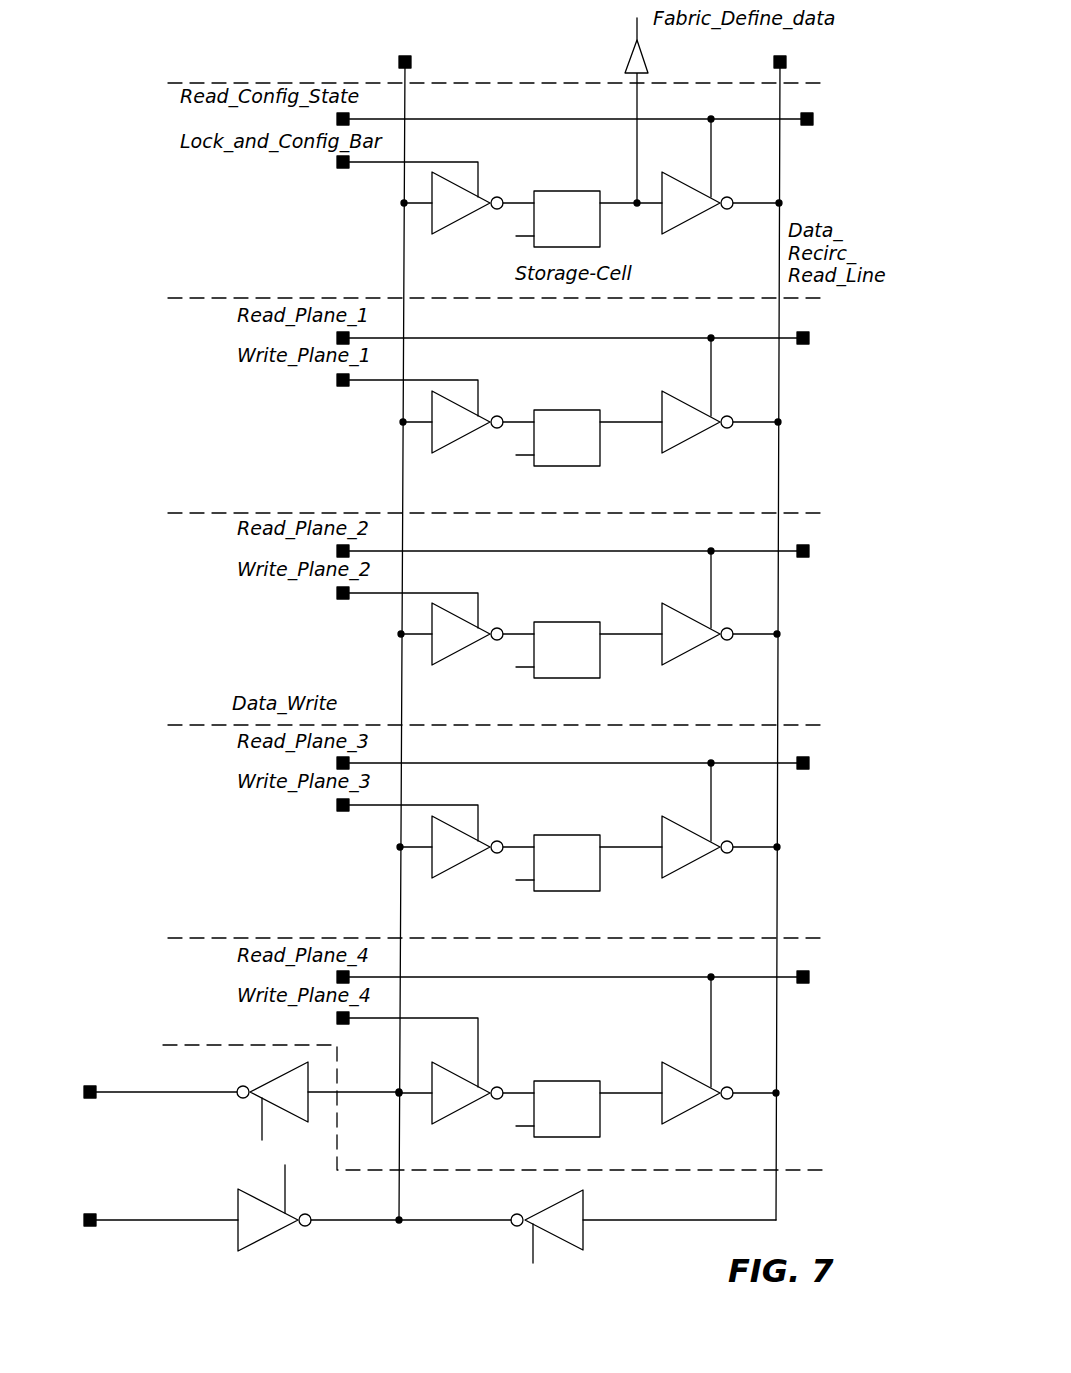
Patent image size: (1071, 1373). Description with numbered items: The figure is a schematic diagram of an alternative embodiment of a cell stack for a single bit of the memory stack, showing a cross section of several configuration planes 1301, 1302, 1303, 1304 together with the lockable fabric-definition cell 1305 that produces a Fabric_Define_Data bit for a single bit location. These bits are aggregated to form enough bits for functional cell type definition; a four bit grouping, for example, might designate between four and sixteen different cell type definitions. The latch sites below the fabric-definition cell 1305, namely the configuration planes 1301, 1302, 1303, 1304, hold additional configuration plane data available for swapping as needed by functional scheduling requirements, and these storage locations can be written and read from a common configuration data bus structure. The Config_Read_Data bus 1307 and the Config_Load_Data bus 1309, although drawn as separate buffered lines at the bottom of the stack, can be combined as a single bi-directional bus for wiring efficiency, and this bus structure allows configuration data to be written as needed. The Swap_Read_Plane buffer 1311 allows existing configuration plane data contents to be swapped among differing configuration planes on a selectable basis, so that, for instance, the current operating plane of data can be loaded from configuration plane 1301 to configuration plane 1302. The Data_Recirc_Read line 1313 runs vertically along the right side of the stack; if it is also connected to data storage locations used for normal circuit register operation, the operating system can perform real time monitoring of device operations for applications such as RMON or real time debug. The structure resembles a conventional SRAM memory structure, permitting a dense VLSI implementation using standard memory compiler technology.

The lockable fabric-definition cell 1305 is at (170, 85).
The configuration plane 1301 is at (168, 300).
The configuration plane 1302 is at (166, 515).
The configuration plane 1303 is at (164, 727).
The configuration plane 1304 is at (164, 940).
The Config_Read_Data bus 1307 is at (168, 1093).
The Config_Load_Data bus 1309 is at (168, 1221).
The Swap_Read_Plane buffer 1311 is at (583, 1206).
The Data_Recirc_Read line 1313 is at (777, 392).